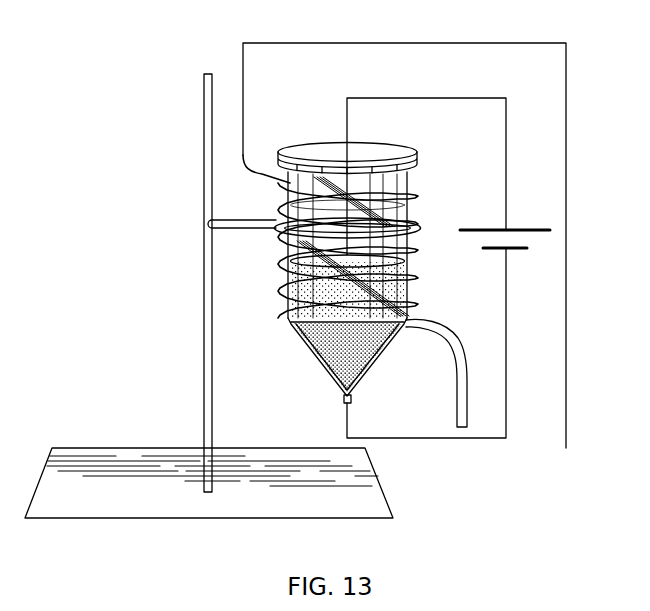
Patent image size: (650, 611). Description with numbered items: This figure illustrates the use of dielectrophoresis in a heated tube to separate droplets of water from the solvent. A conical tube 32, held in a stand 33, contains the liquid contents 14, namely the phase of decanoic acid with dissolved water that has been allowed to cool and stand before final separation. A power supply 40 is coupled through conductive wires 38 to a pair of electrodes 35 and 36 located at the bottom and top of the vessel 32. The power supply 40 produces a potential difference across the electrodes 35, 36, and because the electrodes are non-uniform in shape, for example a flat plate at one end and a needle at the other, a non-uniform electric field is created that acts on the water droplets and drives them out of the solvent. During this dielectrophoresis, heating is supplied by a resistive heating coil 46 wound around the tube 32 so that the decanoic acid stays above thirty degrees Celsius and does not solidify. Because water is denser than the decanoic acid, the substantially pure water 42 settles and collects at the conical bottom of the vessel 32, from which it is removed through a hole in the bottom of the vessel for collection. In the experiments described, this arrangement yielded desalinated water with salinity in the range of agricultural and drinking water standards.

The liquid composition 14 is at (308, 298).
The conical tube 32 is at (290, 193).
The stand 33 is at (208, 103).
The electrode 35 is at (318, 348).
The electrode 36 is at (416, 265).
The conductive wires 38 is at (437, 98).
The power supply 40 is at (536, 207).
The substantially pure water 42 is at (335, 372).
The resistive heating coil 46 is at (566, 135).